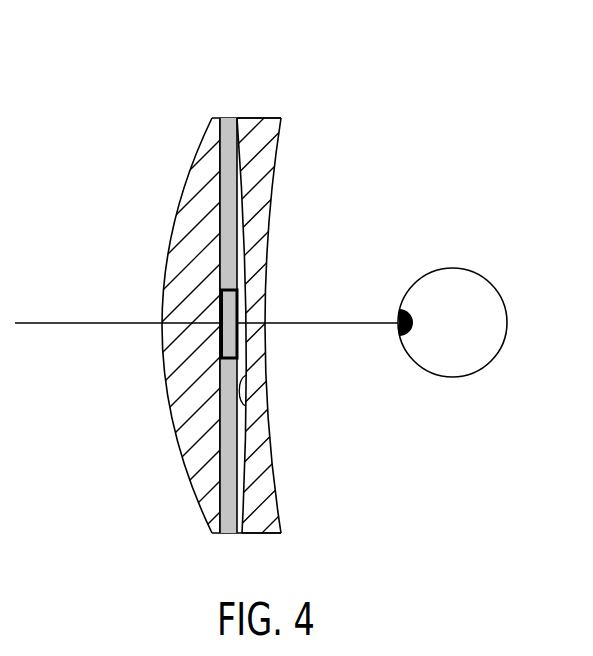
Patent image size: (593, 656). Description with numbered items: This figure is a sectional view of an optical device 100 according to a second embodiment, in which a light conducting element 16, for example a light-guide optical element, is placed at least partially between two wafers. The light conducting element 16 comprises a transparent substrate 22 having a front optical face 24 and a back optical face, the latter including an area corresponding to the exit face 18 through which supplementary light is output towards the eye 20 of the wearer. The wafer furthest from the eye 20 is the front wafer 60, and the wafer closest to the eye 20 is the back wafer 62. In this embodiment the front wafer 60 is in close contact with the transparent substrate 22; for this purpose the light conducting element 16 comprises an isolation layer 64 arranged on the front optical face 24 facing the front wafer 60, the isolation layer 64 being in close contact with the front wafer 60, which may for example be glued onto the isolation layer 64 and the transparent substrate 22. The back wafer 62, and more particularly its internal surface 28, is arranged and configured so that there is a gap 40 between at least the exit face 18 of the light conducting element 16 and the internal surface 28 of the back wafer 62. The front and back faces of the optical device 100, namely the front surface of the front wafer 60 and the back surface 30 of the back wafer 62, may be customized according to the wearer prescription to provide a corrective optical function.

The optical device 100 is at (320, 86).
The front wafer 60 is at (195, 210).
The back wafer 62 is at (268, 152).
The transparent substrate 22 is at (226, 256).
The light conducting element 16 is at (201, 298).
The exit face 18 is at (243, 307).
The front optical face 24 is at (218, 400).
The gap 40 is at (244, 361).
The internal surface 28 is at (251, 374).
The back surface 30 is at (273, 483).
The isolation layer 64 is at (218, 465).
The eye 20 is at (482, 337).